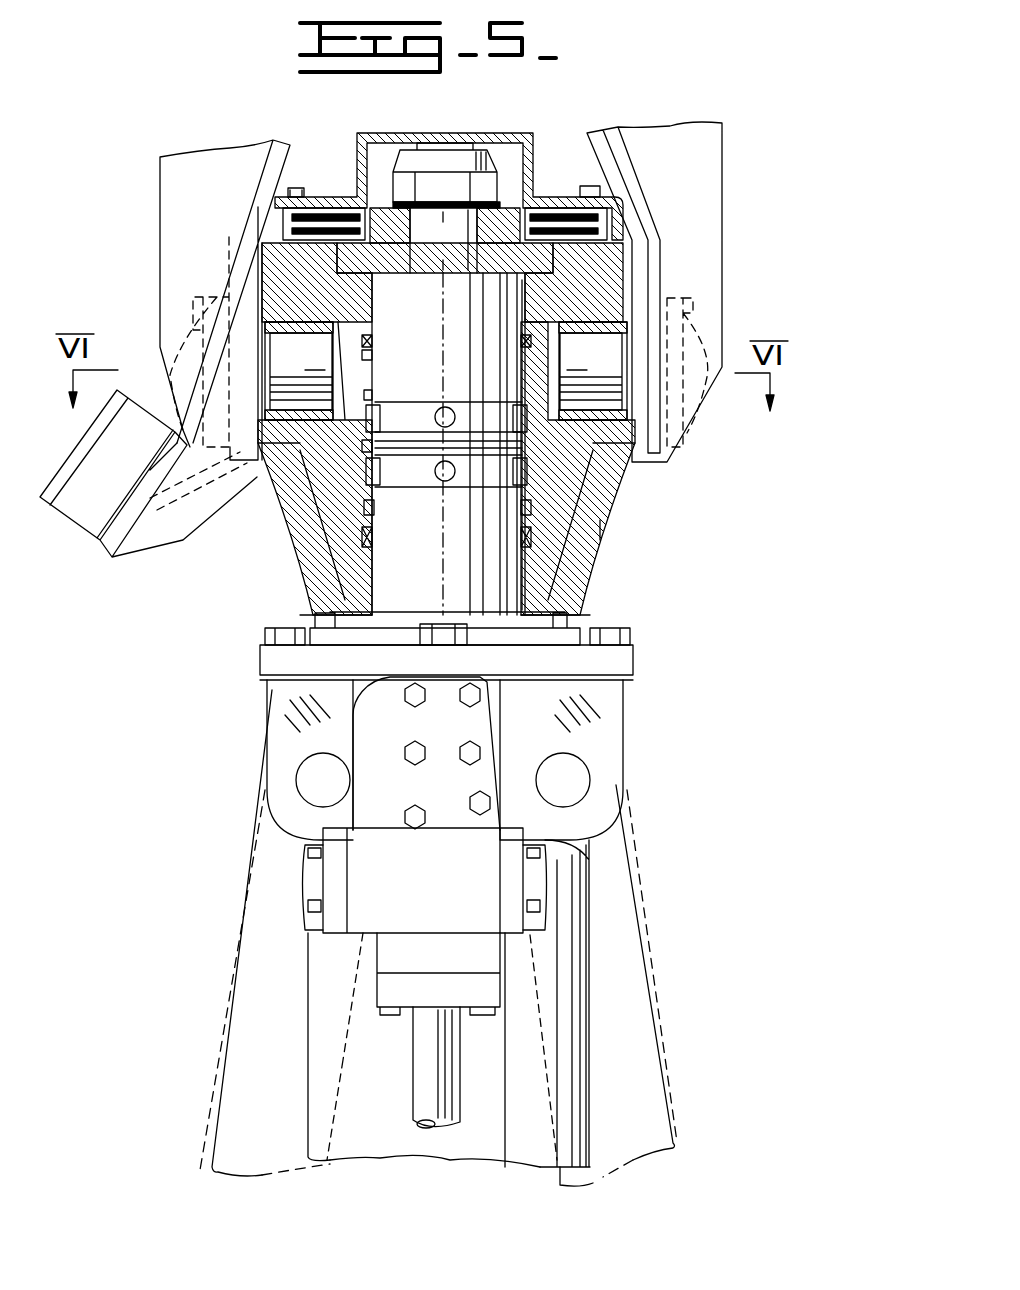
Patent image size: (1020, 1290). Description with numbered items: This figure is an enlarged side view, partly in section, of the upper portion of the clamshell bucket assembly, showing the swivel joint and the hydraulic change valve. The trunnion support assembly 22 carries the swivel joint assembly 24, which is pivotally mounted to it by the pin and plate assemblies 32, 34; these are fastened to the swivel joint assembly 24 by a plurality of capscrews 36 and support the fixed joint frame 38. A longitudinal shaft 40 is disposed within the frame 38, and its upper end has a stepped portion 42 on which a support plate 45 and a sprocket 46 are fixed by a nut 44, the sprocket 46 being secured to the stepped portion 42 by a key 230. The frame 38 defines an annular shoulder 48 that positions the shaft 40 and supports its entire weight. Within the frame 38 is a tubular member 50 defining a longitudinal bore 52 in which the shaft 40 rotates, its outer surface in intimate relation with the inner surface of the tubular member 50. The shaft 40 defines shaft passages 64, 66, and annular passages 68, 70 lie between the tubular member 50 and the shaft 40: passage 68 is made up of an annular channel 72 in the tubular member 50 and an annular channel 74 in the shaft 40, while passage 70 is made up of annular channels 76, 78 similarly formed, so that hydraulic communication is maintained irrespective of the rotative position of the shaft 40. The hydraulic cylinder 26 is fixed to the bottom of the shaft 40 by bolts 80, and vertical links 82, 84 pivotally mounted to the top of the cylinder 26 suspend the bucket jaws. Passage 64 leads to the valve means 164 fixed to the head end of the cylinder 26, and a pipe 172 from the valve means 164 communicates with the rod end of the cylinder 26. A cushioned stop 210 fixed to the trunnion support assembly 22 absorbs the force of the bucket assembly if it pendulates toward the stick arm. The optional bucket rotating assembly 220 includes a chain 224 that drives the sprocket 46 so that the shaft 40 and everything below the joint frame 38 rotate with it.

The trunnion support assembly 22 is at (740, 145).
The swivel joint assembly 24 is at (612, 530).
The hydraulic cylinder 26 is at (385, 1145).
The pin and plate assembly 32 is at (317, 282).
The pin and plate assembly 34 is at (601, 334).
The capscrews 36 is at (178, 387).
The joint frame 38 is at (574, 592).
The longitudinal shaft 40 is at (431, 321).
The stepped portion 42 is at (446, 263).
The nut 44 is at (398, 190).
The support plate 45 is at (560, 268).
The sprocket 46 is at (340, 215).
The annular shoulder 48 is at (522, 298).
The tubular member 50 is at (548, 492).
The longitudinal bore 52 is at (365, 522).
The shaft passage 64 is at (449, 484).
The shaft passage 66 is at (448, 405).
The annular passage 68 is at (372, 398).
The annular passage 70 is at (378, 512).
The annular channel 72 is at (364, 420).
The annular channel 74 is at (380, 420).
The annular channel 76 is at (362, 472).
The annular channel 78 is at (380, 472).
The bolts 80 is at (276, 630).
The vertical link 82 is at (630, 966).
The vertical link 84 is at (247, 958).
The valve means 164 is at (459, 898).
The pipe 172 is at (420, 1052).
The cushioned stop 210 is at (136, 481).
The bucket rotating assembly 220 is at (525, 112).
The chain 224 is at (270, 204).
The key 230 is at (480, 228).